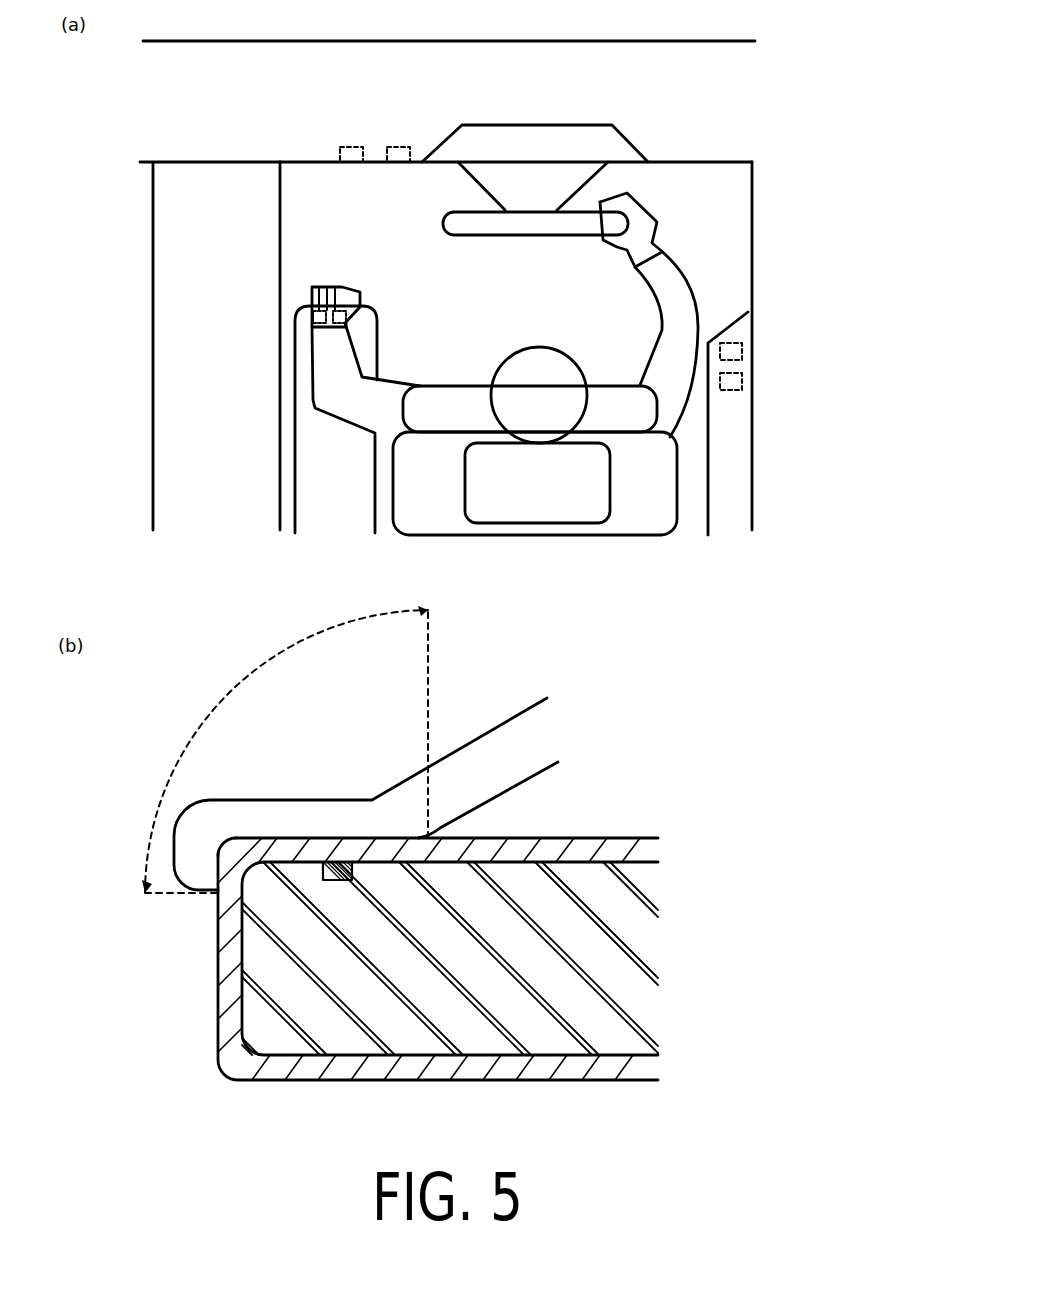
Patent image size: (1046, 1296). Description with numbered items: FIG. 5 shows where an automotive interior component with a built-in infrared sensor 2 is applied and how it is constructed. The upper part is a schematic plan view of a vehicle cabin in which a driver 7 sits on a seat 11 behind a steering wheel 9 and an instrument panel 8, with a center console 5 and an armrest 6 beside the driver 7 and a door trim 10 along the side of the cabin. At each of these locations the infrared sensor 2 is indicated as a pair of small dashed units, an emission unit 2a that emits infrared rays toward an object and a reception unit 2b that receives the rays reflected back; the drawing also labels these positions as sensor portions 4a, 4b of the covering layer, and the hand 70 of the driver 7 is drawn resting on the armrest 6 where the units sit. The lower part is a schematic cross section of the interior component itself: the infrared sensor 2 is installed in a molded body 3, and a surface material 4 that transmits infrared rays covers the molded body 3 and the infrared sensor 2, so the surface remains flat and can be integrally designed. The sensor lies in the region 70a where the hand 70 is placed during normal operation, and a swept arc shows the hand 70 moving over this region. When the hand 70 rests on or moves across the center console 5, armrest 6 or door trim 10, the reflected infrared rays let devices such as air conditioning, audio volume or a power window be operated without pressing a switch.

The infrared sensor 2 is at (462, 556).
The emission unit 2a is at (447, 556).
The reception unit 2b is at (516, 237).
The molded body 3 is at (407, 1040).
The surface material 4 is at (218, 1076).
The first sensor portion 4a is at (399, 147).
The second sensor portion 4b is at (340, 152).
The center console 5 is at (165, 297).
The armrest 6 is at (377, 340).
The driver 7 is at (552, 320).
The instrument panel 8 is at (338, 63).
The steering wheel 9 is at (500, 236).
The door trim 10 is at (737, 513).
The seat 11 is at (645, 527).
The hand 70 is at (343, 288).
The region 70a is at (285, 749).